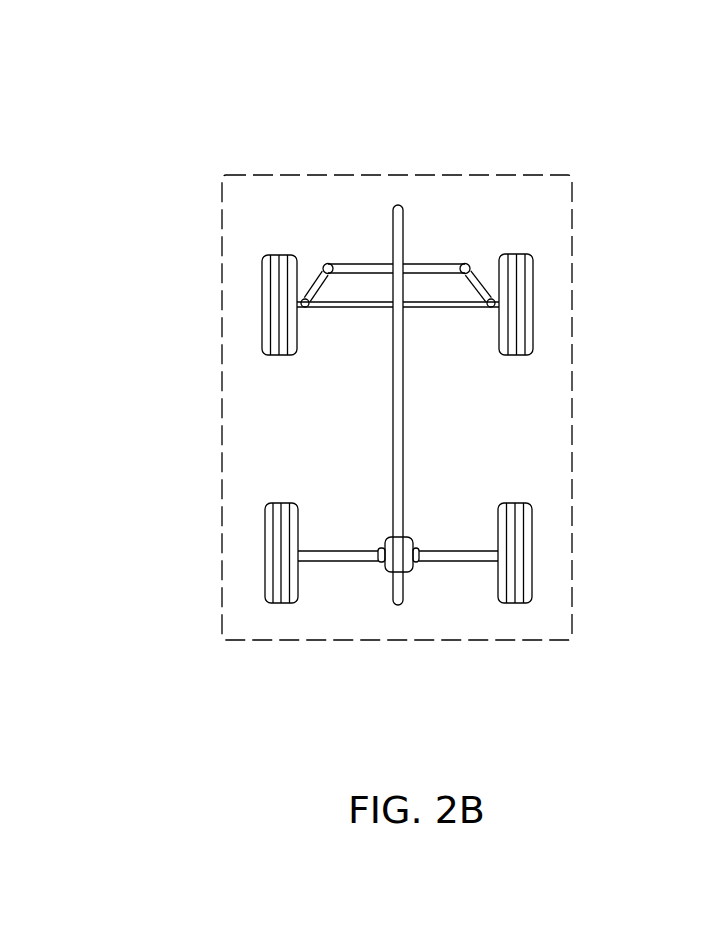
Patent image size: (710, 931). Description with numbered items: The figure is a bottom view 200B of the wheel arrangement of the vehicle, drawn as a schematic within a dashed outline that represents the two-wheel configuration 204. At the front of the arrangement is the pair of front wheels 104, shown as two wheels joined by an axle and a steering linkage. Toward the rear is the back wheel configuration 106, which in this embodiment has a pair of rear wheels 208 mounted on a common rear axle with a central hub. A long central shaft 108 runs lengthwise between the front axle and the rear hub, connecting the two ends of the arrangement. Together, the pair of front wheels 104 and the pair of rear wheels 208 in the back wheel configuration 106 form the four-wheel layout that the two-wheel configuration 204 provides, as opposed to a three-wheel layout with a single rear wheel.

The bottom view 200B is at (288, 120).
The two-wheel configuration 204 is at (575, 212).
The pair of front wheels 104 is at (247, 298).
The back wheel configuration 106 is at (320, 564).
The drive shaft 108 is at (404, 456).
The pair of rear wheels 208 is at (512, 593).